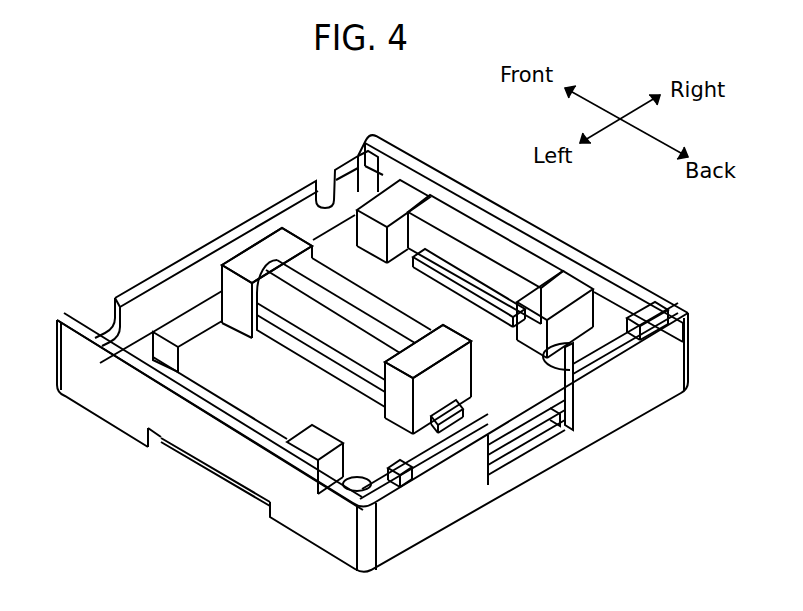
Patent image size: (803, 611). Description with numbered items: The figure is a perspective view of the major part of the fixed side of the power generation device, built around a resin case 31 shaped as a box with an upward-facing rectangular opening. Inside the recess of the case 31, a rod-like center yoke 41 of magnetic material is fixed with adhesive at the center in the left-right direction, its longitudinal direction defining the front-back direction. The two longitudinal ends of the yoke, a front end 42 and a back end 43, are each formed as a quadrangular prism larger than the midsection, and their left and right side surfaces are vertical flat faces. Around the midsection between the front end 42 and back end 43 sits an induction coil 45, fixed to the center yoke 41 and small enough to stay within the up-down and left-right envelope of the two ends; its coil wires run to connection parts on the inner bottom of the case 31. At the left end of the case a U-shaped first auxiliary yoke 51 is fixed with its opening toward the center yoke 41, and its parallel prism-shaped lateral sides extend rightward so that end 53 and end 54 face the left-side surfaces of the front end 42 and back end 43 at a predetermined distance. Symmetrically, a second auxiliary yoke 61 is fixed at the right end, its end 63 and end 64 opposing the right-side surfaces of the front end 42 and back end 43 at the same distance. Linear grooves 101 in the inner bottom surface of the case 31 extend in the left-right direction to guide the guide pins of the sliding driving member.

The case 31 is at (418, 515).
The center yoke 41 is at (346, 303).
The front end 42 is at (253, 257).
The back end 43 is at (467, 443).
The induction coil 45 is at (345, 300).
The first auxiliary yoke 51 is at (227, 410).
The end 53 is at (183, 358).
The end 54 is at (262, 497).
The second auxiliary yoke 61 is at (490, 245).
The end 63 is at (377, 237).
The end 64 is at (577, 297).
The linear grooves 101 is at (573, 393).